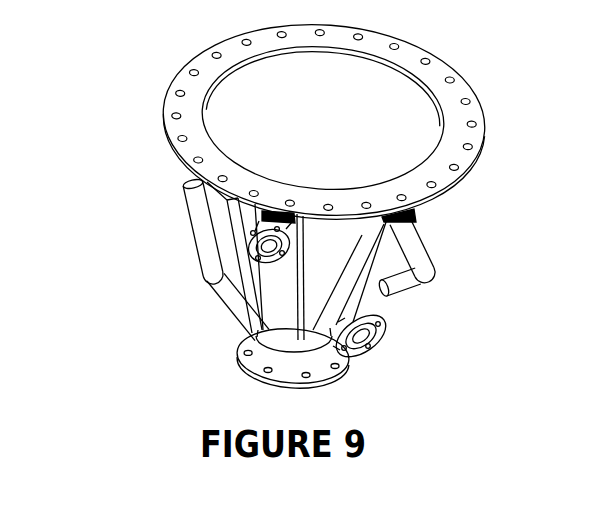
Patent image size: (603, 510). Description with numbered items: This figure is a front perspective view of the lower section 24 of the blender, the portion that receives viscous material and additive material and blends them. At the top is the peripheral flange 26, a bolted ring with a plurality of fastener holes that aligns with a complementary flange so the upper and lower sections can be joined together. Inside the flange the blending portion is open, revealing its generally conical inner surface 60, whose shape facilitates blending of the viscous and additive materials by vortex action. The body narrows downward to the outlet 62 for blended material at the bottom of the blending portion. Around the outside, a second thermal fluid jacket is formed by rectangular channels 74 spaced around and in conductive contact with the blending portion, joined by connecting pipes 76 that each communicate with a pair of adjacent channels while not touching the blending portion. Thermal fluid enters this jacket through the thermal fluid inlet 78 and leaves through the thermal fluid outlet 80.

The lower section 24 is at (522, 120).
The peripheral flange 26 is at (368, 42).
The generally conical inner surface 60 is at (398, 110).
The outlet 62 is at (253, 379).
The rectangular channels 74 is at (223, 217).
The connecting pipes 76 is at (193, 254).
The thermal fluid inlet 78 is at (368, 348).
The thermal fluid outlet 80 is at (267, 258).